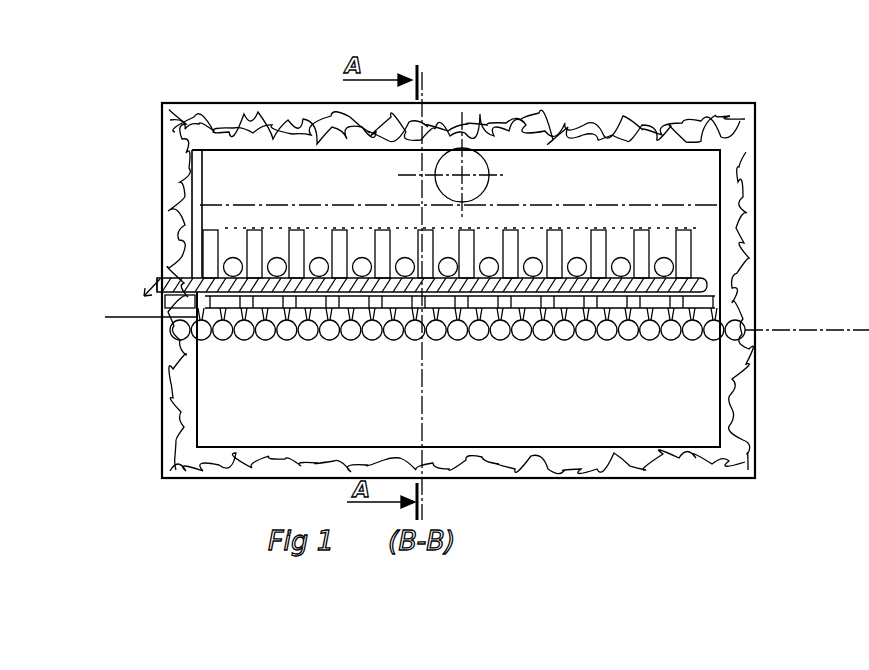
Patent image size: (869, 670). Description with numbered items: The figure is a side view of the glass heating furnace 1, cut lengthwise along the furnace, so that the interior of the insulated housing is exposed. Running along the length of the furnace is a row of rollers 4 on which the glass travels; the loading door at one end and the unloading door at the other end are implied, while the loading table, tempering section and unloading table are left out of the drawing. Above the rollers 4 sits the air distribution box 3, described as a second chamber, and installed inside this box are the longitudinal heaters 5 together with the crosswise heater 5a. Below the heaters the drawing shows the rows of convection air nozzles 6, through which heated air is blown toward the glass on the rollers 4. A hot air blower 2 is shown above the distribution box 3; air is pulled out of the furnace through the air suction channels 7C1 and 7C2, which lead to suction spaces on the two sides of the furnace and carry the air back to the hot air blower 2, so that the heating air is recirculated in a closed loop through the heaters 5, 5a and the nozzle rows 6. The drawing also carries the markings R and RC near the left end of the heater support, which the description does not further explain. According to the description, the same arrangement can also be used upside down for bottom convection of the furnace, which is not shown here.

The insulated housing 1 is at (600, 117).
The hot air blower 2 is at (470, 160).
The air distribution box 3 is at (684, 186).
The rollers 4 is at (747, 330).
The longitudinal heaters 5 is at (702, 290).
The crosswise heater 5a is at (660, 264).
The convection air nozzle rows 6 is at (723, 340).
The air suction channel 7C1 is at (205, 291).
The air suction channel 7C2 is at (212, 242).
The direction R is at (139, 279).
The reference line RC is at (150, 305).